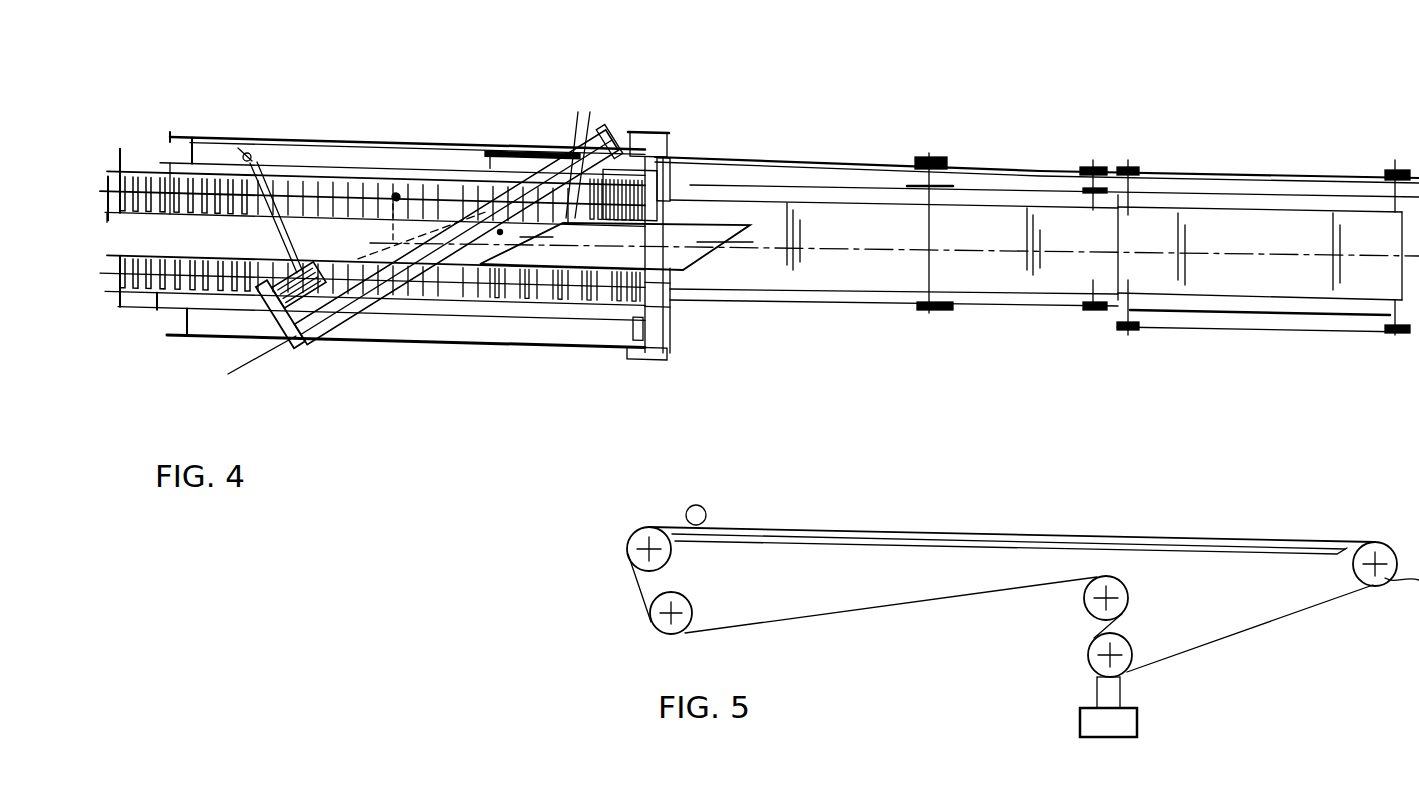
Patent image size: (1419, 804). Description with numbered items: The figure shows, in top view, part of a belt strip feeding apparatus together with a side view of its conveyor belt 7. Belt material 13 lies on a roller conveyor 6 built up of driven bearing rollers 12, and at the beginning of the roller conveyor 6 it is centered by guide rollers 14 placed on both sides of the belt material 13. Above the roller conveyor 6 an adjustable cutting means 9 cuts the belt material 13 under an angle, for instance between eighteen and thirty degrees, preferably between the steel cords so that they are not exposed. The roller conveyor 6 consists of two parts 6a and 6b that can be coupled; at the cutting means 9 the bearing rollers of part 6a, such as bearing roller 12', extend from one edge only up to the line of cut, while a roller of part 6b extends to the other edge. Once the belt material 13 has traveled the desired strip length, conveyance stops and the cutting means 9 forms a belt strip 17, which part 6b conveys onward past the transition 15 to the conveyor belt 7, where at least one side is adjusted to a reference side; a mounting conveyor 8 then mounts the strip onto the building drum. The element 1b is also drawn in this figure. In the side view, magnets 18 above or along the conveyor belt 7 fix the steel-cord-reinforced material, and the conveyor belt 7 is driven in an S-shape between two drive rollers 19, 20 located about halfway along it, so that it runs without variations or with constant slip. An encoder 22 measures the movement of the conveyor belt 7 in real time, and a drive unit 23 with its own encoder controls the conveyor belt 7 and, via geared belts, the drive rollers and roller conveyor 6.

In FIG. 4, the roller conveyor 6 is at (310, 160).
In FIG. 4, the part of the roller conveyor 6a is at (344, 204).
In FIG. 4, the part of the roller conveyor 6b is at (500, 290).
In FIG. 4, the conveyor belt 7 is at (887, 219).
In FIG. 5, the conveyor belt 7 is at (1350, 537).
In FIG. 4, the mounting conveyor 8 is at (1242, 224).
In FIG. 4, the cutting means 9 is at (343, 308).
In FIG. 4, the bearing rollers 12 is at (185, 187).
In FIG. 4, the bearing roller 12' is at (421, 168).
In FIG. 4, the belt material 13 is at (118, 233).
In FIG. 4, the guide rollers 14 is at (109, 166).
In FIG. 4, the transition 15 is at (641, 330).
In FIG. 4, the belt strip 17 is at (688, 235).
In FIG. 4, the blade 1b is at (582, 149).
In FIG. 5, the magnets 18 is at (1163, 538).
In FIG. 5, the drive roller 19 is at (1089, 609).
In FIG. 5, the drive roller 20 is at (1094, 661).
In FIG. 5, the encoder 22 is at (691, 505).
In FIG. 5, the drive unit 23 is at (1138, 722).